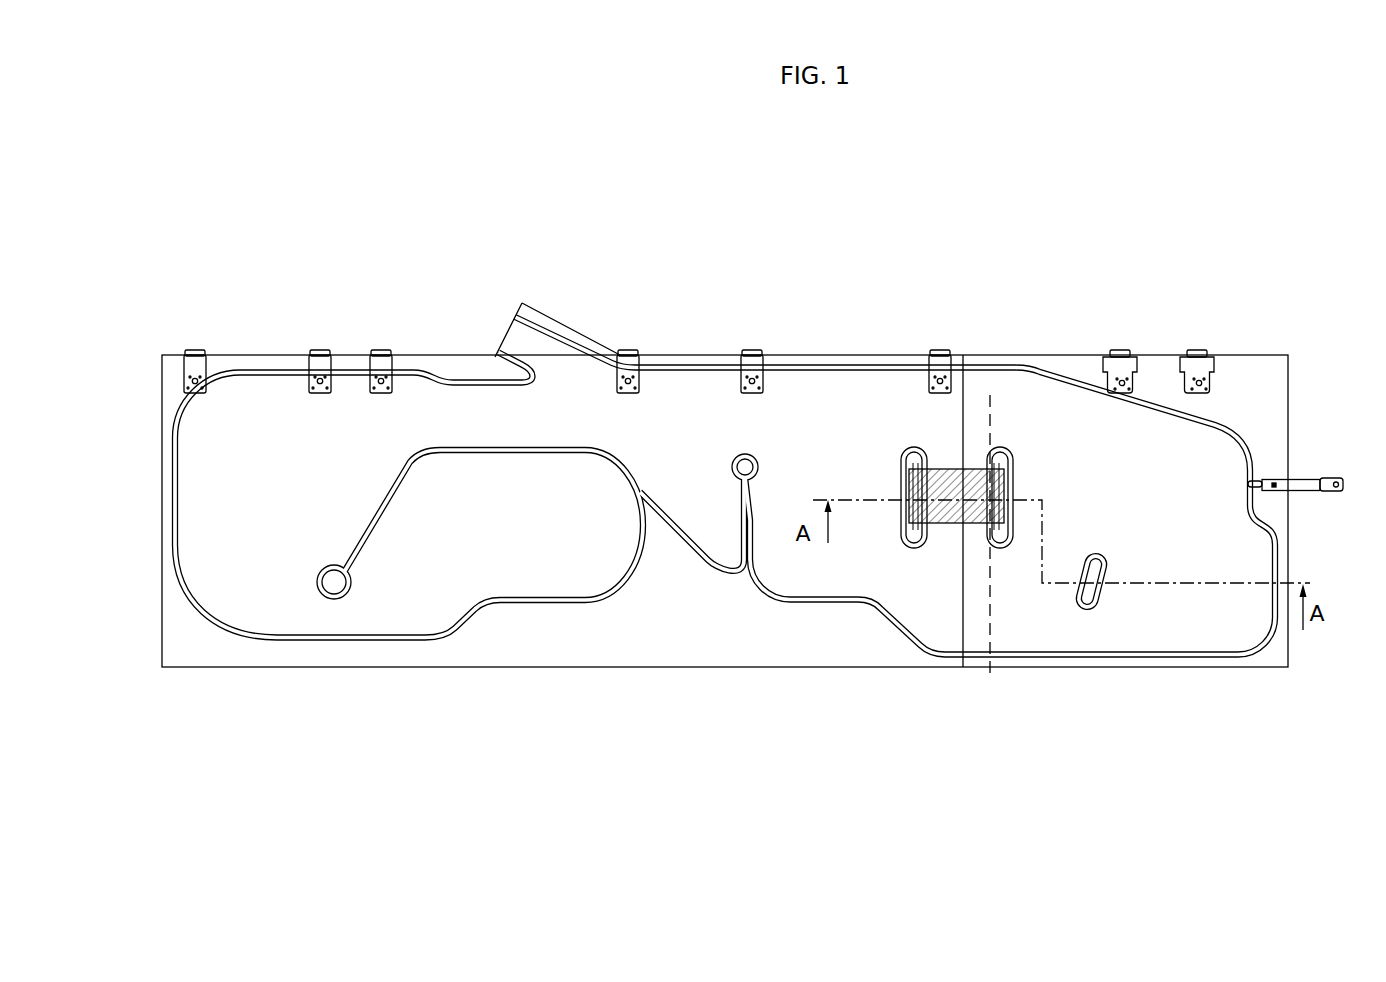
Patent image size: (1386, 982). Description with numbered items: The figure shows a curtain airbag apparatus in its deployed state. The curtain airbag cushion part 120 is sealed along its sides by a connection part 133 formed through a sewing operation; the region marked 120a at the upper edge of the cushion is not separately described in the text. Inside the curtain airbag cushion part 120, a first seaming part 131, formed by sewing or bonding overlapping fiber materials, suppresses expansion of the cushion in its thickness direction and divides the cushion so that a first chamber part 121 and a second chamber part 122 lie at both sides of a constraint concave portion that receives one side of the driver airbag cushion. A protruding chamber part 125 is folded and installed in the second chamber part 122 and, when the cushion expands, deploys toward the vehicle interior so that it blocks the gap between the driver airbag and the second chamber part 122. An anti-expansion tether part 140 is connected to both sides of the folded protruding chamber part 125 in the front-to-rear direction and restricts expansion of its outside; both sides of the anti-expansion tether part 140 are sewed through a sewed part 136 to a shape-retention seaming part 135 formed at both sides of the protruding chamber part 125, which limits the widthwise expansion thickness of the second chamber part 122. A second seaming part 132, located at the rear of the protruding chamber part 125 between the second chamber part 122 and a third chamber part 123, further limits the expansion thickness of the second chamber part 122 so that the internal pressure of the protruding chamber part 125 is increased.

The curtain airbag cushion part 120 is at (820, 345).
The inlet pipe 120a is at (517, 335).
The first chamber part 121 is at (1208, 607).
The second chamber part 122 is at (830, 575).
The third chamber part 123 is at (697, 510).
The protruding chamber part 125 is at (990, 400).
The first seaming part 131 is at (1088, 587).
The second seaming part 132 is at (764, 537).
The connection part 133 is at (1150, 405).
The shape-retention seaming part 135 is at (1002, 547).
The sewed part 136 is at (1003, 478).
The anti-expansion tether part 140 is at (947, 486).